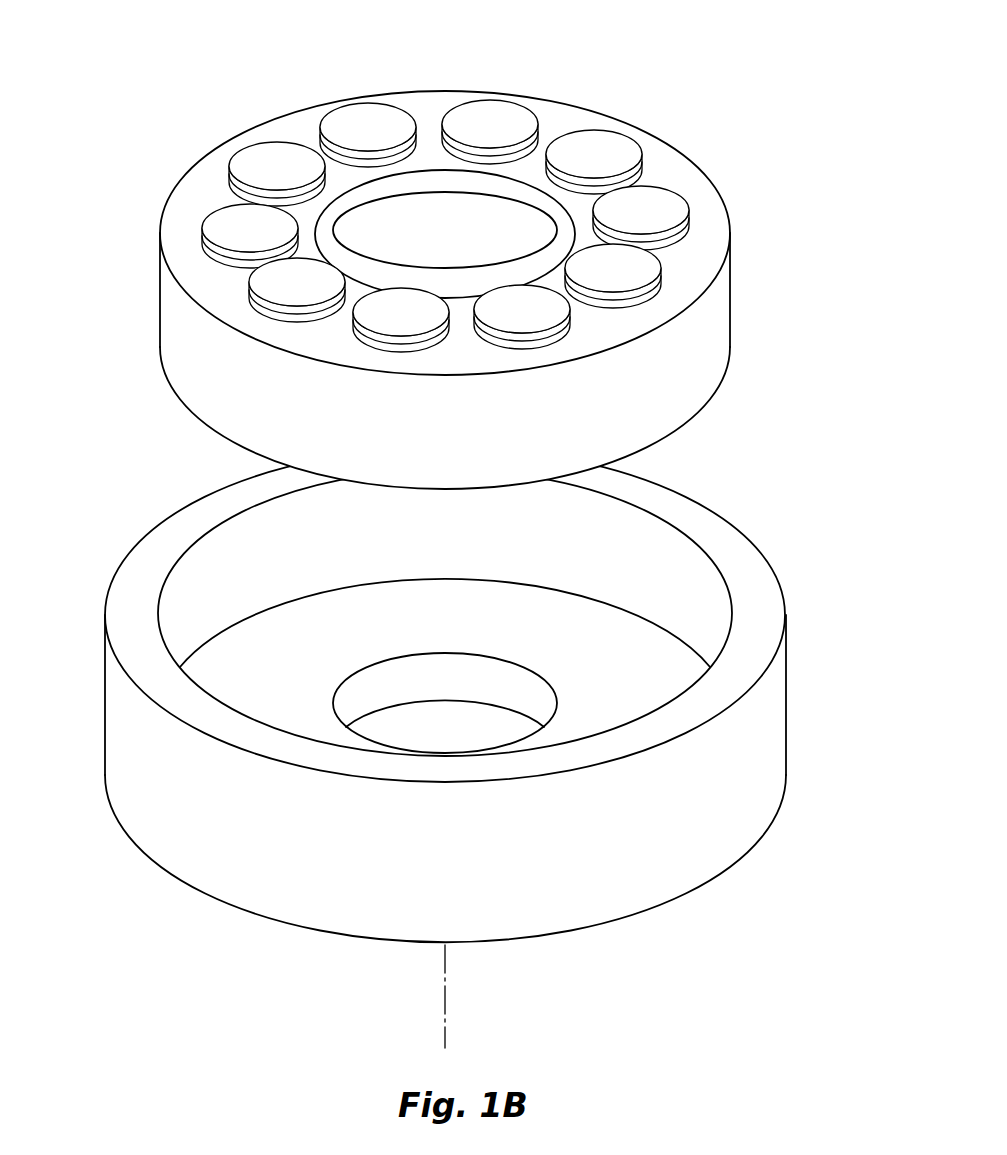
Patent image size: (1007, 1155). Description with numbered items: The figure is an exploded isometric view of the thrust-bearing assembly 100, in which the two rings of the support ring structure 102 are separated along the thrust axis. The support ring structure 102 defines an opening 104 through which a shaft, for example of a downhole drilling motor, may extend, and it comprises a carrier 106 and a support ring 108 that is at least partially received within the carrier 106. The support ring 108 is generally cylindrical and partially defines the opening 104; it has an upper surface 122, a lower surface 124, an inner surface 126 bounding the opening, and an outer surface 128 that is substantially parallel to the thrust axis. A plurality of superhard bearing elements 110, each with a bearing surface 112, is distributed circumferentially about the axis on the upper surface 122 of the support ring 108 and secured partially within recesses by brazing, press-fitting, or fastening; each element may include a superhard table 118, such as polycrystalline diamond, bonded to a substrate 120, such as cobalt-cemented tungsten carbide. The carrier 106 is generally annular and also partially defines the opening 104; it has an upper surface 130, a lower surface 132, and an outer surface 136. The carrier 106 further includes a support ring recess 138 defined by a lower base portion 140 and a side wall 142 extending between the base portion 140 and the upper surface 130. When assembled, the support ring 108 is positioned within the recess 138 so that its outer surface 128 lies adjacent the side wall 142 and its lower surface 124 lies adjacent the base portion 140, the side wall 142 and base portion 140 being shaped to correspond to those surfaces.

The thrust-bearing assembly 100 is at (459, 525).
The support ring structure 102 is at (450, 245).
The opening 104 is at (541, 150).
The carrier 106 is at (459, 695).
The support ring 108 is at (740, 264).
The superhard bearing elements 110 is at (446, 177).
The bearing surface 112 is at (566, 83).
The superhard table 118 is at (566, 96).
The substrate 120 is at (530, 150).
The upper surface 122 is at (303, 127).
The lower surface 124 is at (708, 364).
The inner surface 126 is at (481, 210).
The outer surface 128 is at (162, 298).
The upper surface 130 is at (775, 598).
The lower surface 132 is at (152, 860).
The outer surface 136 is at (120, 747).
The support ring recess 138 is at (605, 628).
The lower base portion 140 is at (202, 607).
The side wall 142 is at (213, 545).